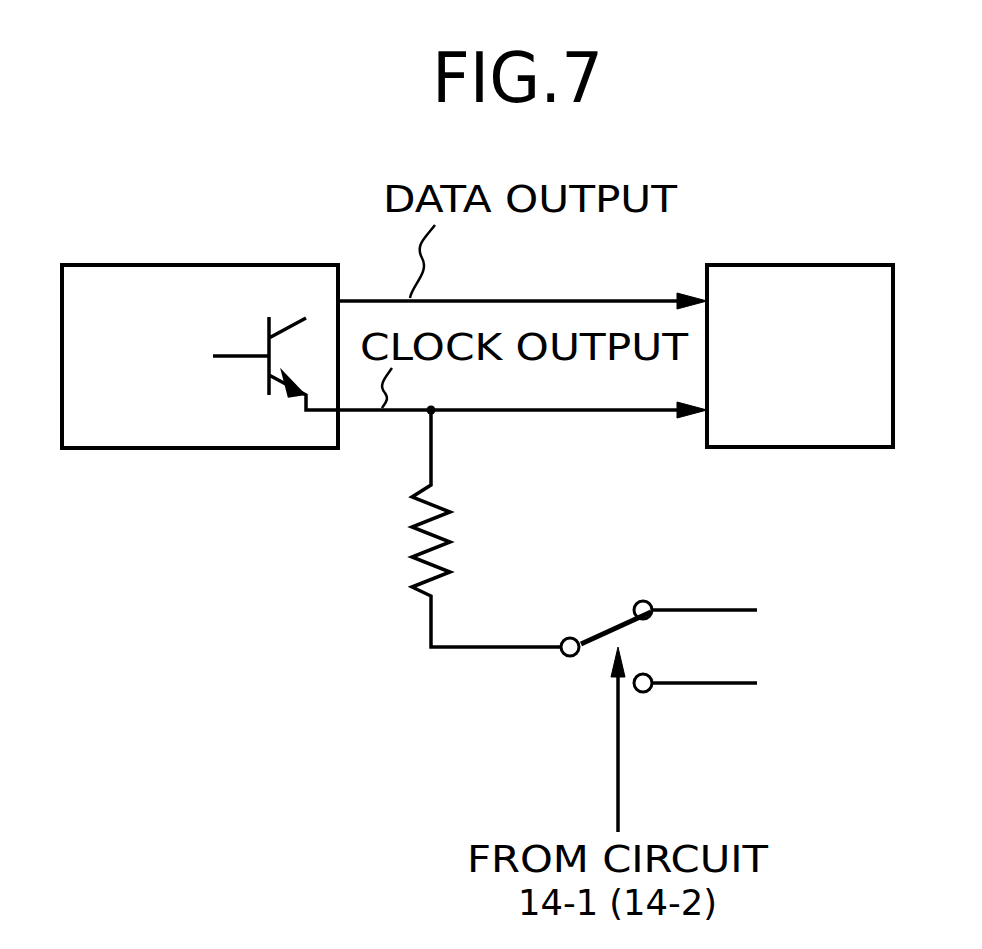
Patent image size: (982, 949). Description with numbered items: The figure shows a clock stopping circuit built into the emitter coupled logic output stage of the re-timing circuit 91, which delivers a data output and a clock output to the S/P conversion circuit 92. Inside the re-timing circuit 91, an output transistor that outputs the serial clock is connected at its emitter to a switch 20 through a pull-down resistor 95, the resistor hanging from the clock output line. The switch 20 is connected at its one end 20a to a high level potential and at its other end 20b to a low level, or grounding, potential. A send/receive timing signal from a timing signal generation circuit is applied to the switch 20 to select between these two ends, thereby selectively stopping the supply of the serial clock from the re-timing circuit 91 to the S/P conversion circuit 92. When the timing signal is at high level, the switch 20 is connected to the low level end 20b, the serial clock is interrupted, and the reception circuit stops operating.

The re-timing circuit 91 is at (240, 265).
The S/P conversion circuit 92 is at (805, 265).
The pull-down resistor 95 is at (440, 503).
The switch 20 is at (612, 622).
The one end of switch 20a is at (650, 603).
The other end of switch 20b is at (647, 690).